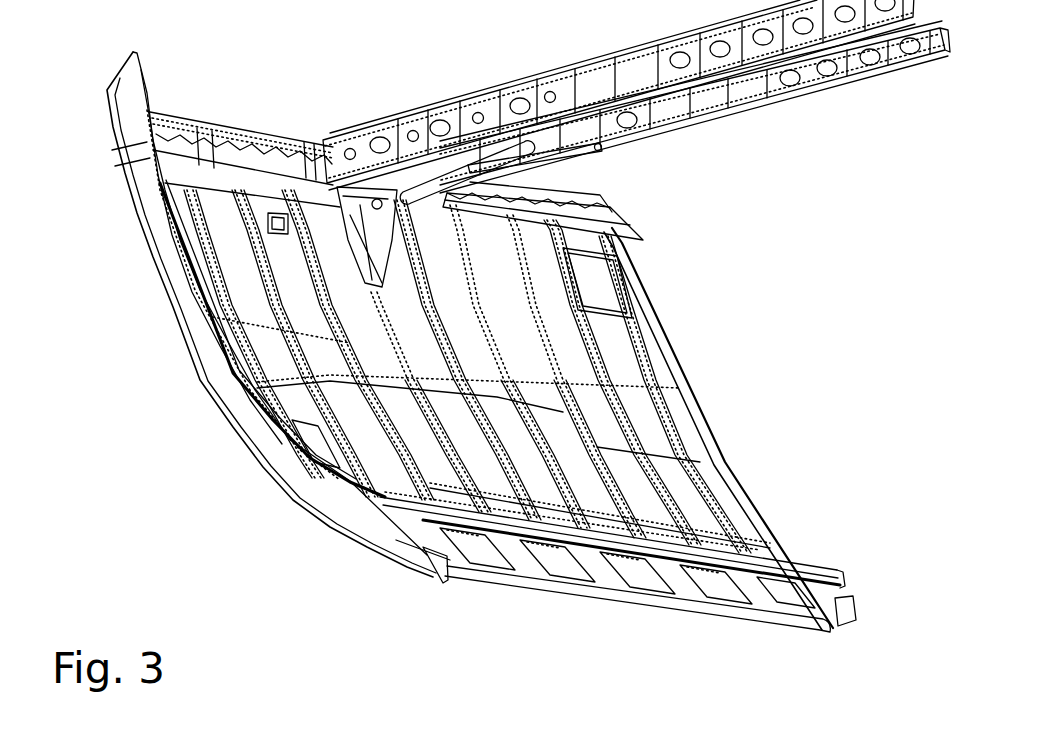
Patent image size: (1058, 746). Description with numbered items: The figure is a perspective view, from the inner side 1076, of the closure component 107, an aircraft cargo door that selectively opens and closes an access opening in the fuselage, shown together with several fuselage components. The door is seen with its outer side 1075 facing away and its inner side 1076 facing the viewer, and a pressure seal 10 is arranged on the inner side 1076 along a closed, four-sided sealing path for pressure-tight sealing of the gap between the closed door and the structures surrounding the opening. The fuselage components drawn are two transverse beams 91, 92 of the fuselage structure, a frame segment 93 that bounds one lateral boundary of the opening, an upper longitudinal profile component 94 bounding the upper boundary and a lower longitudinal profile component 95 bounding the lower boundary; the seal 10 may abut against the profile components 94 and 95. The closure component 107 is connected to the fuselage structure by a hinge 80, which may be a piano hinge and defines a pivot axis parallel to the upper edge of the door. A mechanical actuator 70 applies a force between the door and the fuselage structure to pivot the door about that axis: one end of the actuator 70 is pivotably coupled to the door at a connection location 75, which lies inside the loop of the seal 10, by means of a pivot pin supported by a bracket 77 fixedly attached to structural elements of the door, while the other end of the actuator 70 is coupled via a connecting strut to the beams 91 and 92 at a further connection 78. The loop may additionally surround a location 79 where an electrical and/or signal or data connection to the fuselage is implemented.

The pressure seal 10 is at (230, 372).
The mechanical actuator 70 is at (413, 172).
The connection location 75 is at (443, 240).
The bracket 77 is at (421, 214).
The further connection 78 is at (535, 140).
The location of electrical and/or signal or data connection 79 is at (257, 220).
The hinge 80 is at (604, 204).
The transverse beam 91 is at (692, 102).
The transverse beam 92 is at (830, 14).
The frame segment 93 is at (177, 297).
The upper longitudinal profile component 94 is at (260, 150).
The lower longitudinal profile component 95 is at (723, 548).
The closure component 107 is at (426, 362).
The outer side 1075 is at (226, 468).
The inner side 1076 is at (640, 374).